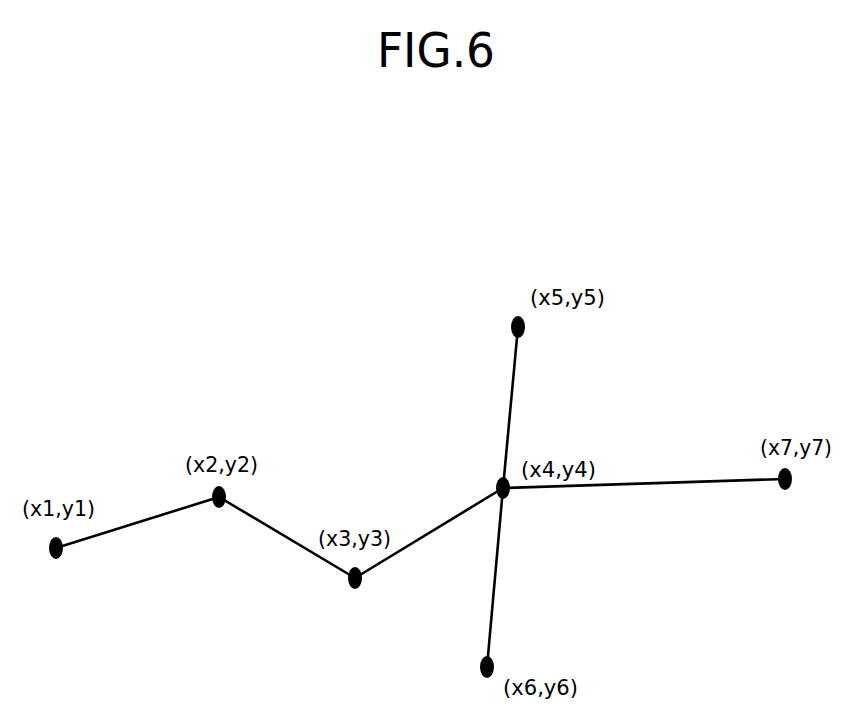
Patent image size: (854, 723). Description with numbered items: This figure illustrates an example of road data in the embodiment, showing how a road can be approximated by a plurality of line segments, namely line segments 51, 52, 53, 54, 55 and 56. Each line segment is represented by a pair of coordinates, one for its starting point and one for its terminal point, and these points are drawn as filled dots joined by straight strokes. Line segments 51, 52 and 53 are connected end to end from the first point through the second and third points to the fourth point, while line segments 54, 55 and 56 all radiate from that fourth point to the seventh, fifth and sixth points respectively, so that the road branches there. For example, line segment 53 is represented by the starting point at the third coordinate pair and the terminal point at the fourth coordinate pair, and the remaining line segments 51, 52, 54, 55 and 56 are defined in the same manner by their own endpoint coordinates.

The line segment 51 is at (103, 534).
The line segment 52 is at (257, 525).
The line segment 53 is at (425, 535).
The line segment 54 is at (628, 483).
The line segment 55 is at (512, 385).
The line segment 56 is at (493, 607).